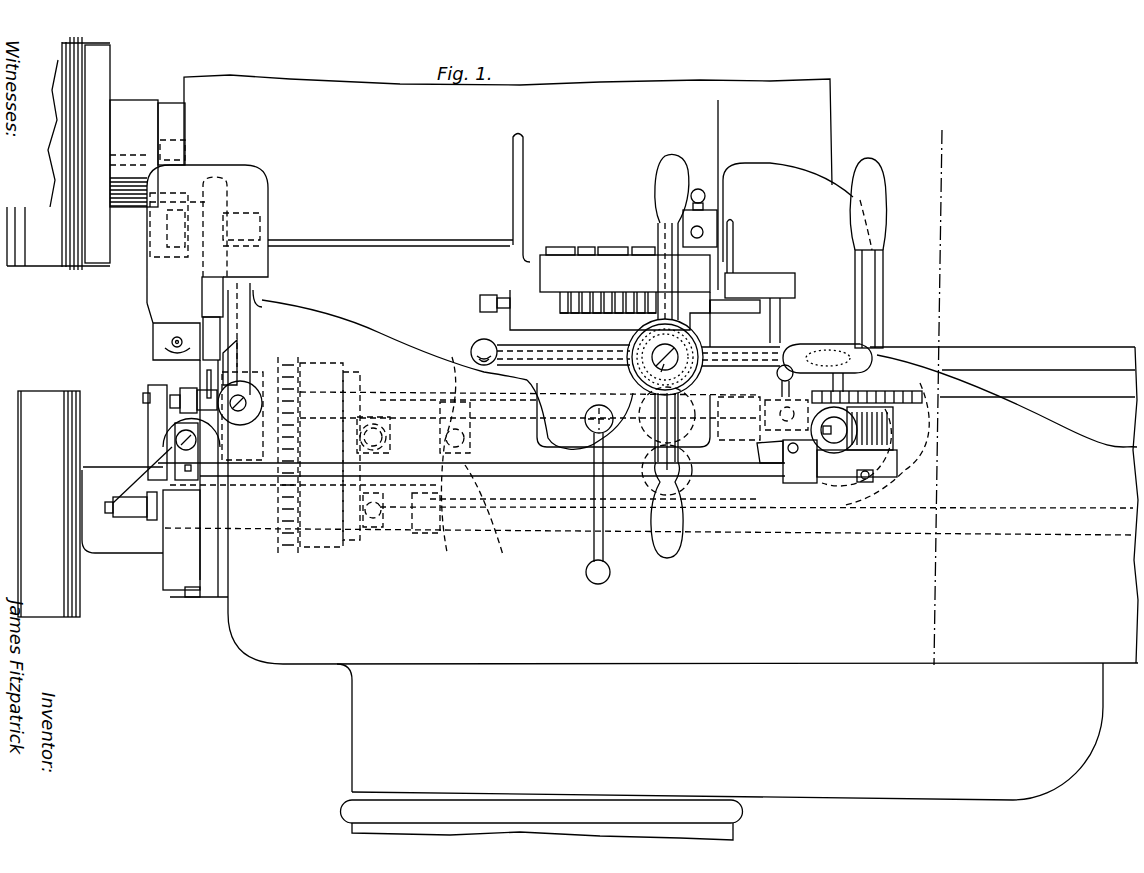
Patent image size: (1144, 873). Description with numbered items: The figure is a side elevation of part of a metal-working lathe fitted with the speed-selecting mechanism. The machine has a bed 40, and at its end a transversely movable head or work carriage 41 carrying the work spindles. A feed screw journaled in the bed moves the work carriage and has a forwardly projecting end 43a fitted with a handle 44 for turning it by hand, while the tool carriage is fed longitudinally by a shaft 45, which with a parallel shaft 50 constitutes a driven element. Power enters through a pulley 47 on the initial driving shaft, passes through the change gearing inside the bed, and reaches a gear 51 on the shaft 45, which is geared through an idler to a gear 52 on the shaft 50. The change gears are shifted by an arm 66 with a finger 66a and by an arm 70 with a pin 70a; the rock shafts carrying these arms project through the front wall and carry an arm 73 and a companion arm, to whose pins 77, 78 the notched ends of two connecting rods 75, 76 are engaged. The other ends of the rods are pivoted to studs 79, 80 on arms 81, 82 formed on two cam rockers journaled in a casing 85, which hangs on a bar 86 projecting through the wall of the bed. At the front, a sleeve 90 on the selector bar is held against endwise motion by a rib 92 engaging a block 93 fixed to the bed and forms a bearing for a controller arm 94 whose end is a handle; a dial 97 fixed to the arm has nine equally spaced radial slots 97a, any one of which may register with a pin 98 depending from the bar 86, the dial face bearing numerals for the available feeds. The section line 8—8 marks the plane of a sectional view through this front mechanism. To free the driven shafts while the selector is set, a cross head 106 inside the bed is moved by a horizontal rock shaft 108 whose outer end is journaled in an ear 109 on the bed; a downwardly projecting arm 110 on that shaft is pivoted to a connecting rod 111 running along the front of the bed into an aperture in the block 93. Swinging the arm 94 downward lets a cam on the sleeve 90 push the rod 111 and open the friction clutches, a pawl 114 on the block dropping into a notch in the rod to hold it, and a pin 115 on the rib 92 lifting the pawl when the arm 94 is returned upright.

The section line 8— 8 is at (935, 404).
The bed 40 is at (1120, 650).
The work carriage 41 is at (833, 110).
The forwardly projecting end of feed screw 43a is at (663, 355).
The handle 44 is at (657, 223).
The shaft 45 is at (1133, 552).
The pulley 47 is at (58, 438).
The shaft 50 is at (393, 392).
The gear 51 is at (285, 553).
The gear 52 is at (293, 363).
The arm 66 is at (490, 528).
The finger 66a is at (457, 465).
The arm 70 is at (401, 506).
The pin or projection 70a is at (386, 546).
The arm 73 is at (352, 462).
The connecting rod 75 is at (553, 490).
The connecting rod 76 is at (728, 400).
The pin 77 is at (432, 448).
The pin 78 is at (455, 375).
The stud 79 is at (900, 472).
The stud 80 is at (776, 381).
The arm 81 is at (872, 485).
The arm 82 is at (570, 415).
The casing 85 is at (917, 423).
The bar 86 is at (835, 344).
The sleeve or hub 90 is at (898, 447).
The rib 92 is at (820, 381).
The block 93 is at (808, 483).
The arm or controller 94 is at (880, 272).
The dial or disk 97 is at (906, 412).
The radial slots 97a is at (899, 368).
The pin 98 is at (881, 357).
The cross head 106 is at (160, 447).
The rock shaft 108 is at (175, 433).
The ear 109 is at (170, 450).
The arm 110 is at (229, 407).
The connecting rod 111 is at (503, 468).
The pawl 114 is at (782, 418).
The pin 115 is at (787, 439).